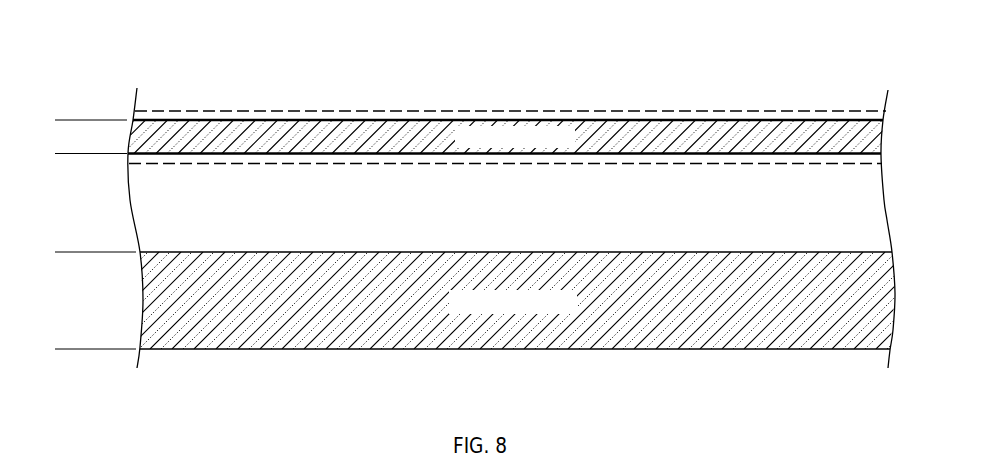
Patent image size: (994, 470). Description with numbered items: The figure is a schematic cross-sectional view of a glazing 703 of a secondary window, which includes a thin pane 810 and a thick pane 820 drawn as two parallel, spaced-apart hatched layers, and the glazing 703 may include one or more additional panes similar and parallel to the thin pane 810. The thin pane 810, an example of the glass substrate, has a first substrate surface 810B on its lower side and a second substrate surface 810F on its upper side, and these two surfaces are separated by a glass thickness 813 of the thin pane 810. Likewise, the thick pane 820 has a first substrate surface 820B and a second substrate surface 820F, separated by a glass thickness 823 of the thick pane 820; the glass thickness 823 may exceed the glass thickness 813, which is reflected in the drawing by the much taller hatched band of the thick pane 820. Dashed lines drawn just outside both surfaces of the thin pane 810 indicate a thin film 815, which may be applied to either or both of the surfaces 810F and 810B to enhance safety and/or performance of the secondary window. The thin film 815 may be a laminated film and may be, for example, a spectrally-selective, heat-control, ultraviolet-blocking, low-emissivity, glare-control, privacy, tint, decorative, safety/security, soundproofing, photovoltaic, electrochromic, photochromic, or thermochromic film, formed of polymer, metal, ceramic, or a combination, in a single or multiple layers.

The glazing 703 is at (203, 47).
The thin pane 810 is at (503, 137).
The second substrate surface 810F is at (383, 110).
The first substrate surface 810B is at (383, 163).
The glass thickness 813 is at (78, 178).
The thin film 815 is at (569, 110).
The thick pane 820 is at (573, 312).
The second substrate surface 820F is at (392, 242).
The first substrate surface 820B is at (381, 359).
The glass thickness 823 is at (78, 261).